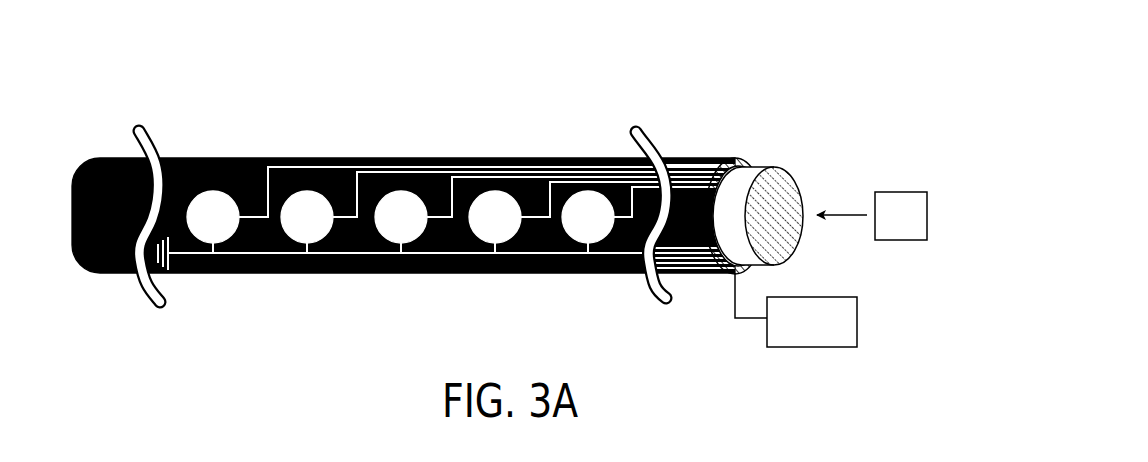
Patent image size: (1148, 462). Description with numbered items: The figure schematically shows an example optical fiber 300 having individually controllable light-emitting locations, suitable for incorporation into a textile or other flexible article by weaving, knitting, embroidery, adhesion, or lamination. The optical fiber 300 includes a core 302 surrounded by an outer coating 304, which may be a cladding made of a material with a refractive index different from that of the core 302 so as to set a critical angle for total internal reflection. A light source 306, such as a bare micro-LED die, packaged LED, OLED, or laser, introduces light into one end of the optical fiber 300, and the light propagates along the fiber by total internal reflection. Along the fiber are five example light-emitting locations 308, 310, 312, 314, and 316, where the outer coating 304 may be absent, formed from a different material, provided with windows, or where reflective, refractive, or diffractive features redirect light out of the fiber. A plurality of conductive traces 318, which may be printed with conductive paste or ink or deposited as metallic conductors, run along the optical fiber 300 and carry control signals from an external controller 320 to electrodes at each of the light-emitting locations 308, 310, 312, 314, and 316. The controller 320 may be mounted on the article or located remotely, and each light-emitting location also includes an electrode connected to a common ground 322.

The optical fiber 300 is at (693, 58).
The core 302 is at (762, 168).
The outer coating 304 is at (532, 157).
The light source 306 is at (918, 227).
The light-emitting location 308 is at (231, 229).
The light-emitting location 310 is at (325, 229).
The light-emitting location 312 is at (419, 229).
The light-emitting location 314 is at (513, 229).
The light-emitting location 316 is at (606, 229).
The conductive traces 318 is at (684, 197).
The controller 320 is at (829, 334).
The common ground 322 is at (167, 273).